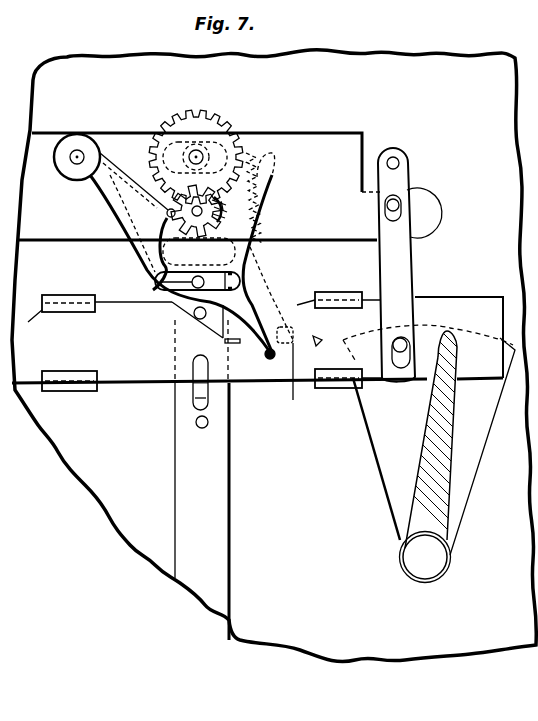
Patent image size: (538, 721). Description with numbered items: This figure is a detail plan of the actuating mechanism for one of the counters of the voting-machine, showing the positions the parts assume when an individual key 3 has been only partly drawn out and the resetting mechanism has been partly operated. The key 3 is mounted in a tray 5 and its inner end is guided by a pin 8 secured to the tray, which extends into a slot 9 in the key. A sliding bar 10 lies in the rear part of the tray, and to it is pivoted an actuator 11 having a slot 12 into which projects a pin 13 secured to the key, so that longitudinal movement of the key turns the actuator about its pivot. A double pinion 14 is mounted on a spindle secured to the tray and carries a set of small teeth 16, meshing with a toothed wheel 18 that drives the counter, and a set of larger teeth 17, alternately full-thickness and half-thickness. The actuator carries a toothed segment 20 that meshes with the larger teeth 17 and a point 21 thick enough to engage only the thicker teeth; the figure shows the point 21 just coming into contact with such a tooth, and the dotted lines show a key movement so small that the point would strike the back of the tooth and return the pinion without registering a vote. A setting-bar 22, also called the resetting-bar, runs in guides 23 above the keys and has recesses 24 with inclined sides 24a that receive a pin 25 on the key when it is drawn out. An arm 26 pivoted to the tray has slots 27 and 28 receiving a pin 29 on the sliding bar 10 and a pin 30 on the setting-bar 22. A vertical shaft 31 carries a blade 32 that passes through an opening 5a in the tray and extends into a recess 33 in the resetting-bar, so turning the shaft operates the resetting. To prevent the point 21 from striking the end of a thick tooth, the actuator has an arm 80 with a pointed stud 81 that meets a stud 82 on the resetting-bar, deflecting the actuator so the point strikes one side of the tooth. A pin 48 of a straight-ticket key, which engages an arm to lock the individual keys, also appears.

The individual key 3 is at (191, 449).
The tray 5 is at (268, 480).
The opening in tray 5a is at (378, 459).
The pin 8 is at (210, 384).
The slot 9 is at (193, 399).
The sliding bar 10 is at (274, 356).
The actuator 11 is at (110, 206).
The slot 12 is at (248, 285).
The pin 13 is at (155, 282).
The double pinion 14 is at (172, 225).
The small teeth 16 is at (175, 207).
The larger teeth 17 is at (178, 243).
The toothed wheel 18 is at (208, 128).
The toothed segment 20 is at (265, 187).
The point 21 is at (168, 214).
The setting-bar 22 is at (133, 323).
The guide 23 is at (70, 371).
The recess 24 is at (235, 344).
The inclined side 24a is at (207, 327).
The pin 25 is at (195, 316).
The arm 26 is at (410, 270).
The slot 27 is at (403, 212).
The slot 28 is at (400, 370).
The pin 29 is at (400, 208).
The pin 30 is at (392, 347).
The shaft 31 is at (437, 558).
The blade 32 is at (452, 427).
The recess 33 is at (458, 340).
The pin 48 is at (202, 428).
The arm 80 is at (252, 335).
The pointed stud 81 is at (276, 360).
The stud 82 is at (322, 339).